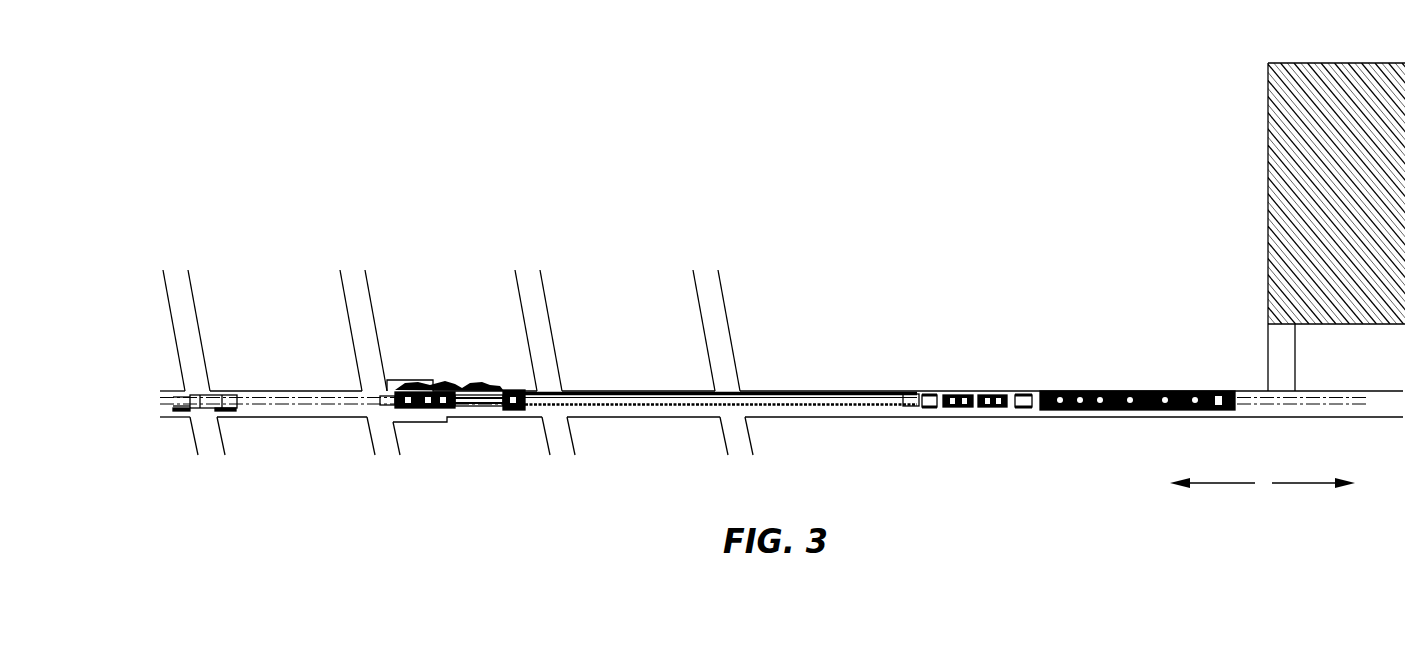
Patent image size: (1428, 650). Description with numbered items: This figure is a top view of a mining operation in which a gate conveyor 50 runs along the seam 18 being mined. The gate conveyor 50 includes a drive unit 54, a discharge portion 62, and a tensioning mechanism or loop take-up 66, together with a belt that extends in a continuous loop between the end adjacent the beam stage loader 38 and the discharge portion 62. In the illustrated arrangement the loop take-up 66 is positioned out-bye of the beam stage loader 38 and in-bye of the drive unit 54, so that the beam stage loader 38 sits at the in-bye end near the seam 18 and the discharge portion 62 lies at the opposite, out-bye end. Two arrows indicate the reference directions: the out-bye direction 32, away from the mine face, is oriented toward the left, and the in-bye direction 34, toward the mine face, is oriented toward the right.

The seam 18 is at (1268, 142).
The gate conveyor 50 is at (835, 352).
The discharge portion 62 is at (215, 393).
The drive unit 54 is at (437, 408).
The loop take-up 66 is at (879, 427).
The beam stage loader 38 is at (1113, 391).
The out-bye direction 32 is at (1203, 483).
The in-bye direction 34 is at (1325, 483).